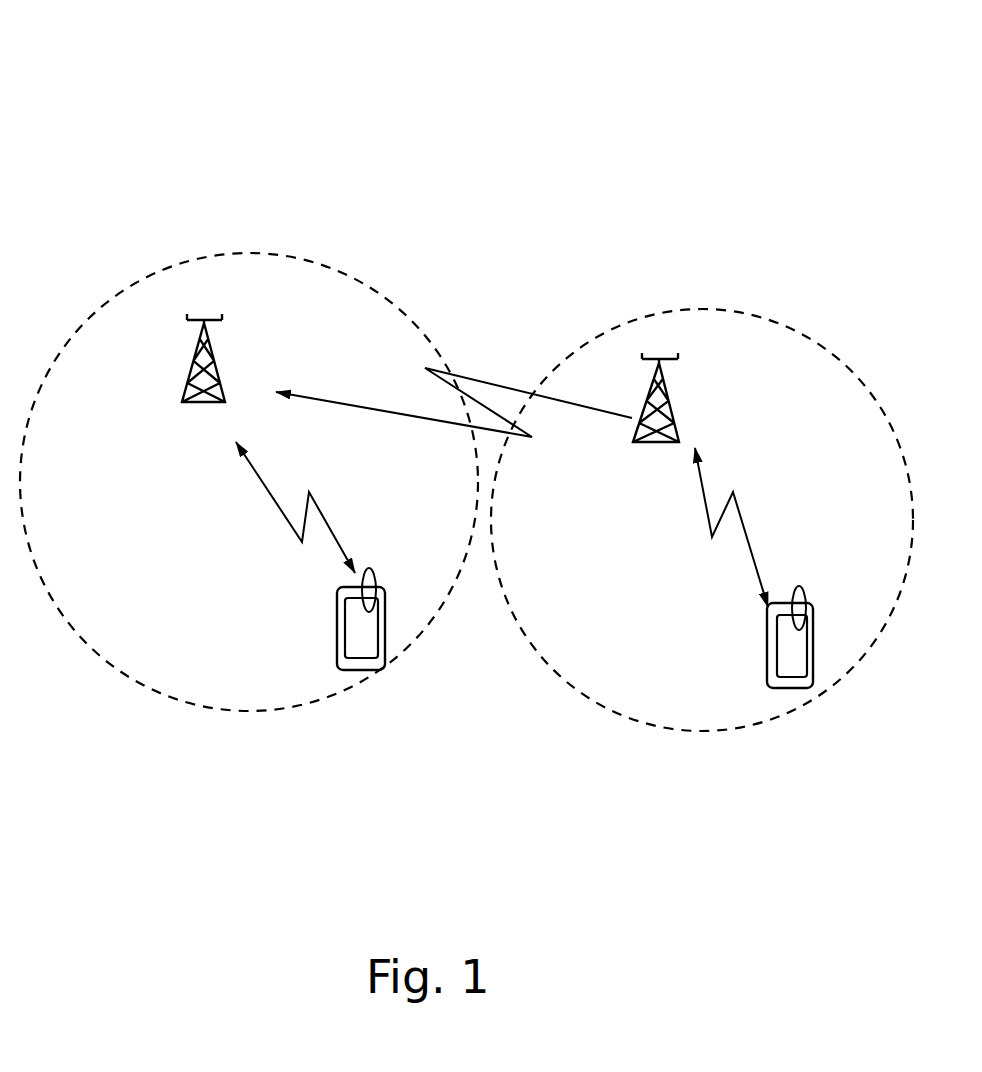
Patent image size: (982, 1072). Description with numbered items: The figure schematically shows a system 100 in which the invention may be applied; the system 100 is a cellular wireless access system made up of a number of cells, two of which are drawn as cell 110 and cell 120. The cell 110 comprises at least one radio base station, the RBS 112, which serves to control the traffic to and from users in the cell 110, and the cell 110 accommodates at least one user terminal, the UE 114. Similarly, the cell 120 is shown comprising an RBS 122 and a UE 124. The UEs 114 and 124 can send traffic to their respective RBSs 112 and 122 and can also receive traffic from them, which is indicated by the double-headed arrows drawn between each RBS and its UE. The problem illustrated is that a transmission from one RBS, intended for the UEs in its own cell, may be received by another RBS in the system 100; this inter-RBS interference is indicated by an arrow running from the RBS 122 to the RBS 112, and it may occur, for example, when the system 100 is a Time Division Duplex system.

The system 100 is at (183, 77).
The cell 110 is at (106, 289).
The radio base station 112 is at (238, 318).
The user terminal 114 is at (315, 650).
The cell 120 is at (802, 318).
The radio base station 122 is at (680, 338).
The user terminal 124 is at (748, 677).